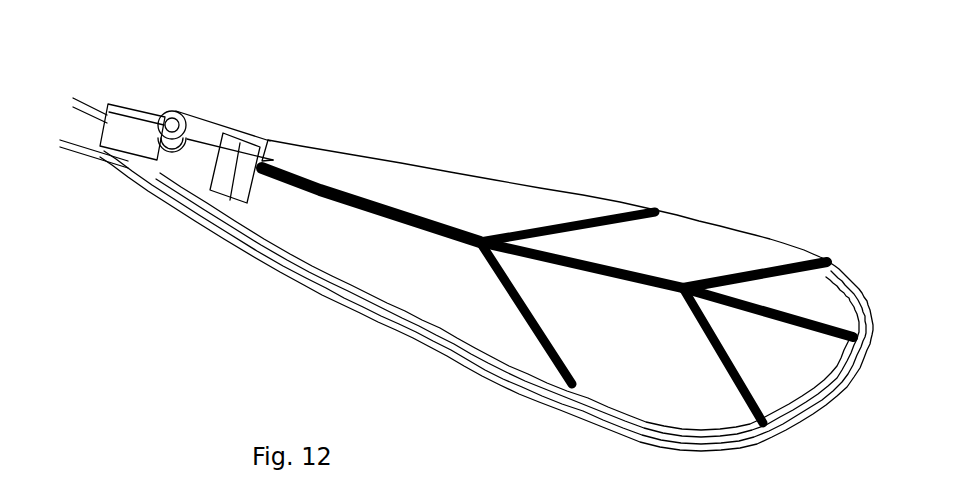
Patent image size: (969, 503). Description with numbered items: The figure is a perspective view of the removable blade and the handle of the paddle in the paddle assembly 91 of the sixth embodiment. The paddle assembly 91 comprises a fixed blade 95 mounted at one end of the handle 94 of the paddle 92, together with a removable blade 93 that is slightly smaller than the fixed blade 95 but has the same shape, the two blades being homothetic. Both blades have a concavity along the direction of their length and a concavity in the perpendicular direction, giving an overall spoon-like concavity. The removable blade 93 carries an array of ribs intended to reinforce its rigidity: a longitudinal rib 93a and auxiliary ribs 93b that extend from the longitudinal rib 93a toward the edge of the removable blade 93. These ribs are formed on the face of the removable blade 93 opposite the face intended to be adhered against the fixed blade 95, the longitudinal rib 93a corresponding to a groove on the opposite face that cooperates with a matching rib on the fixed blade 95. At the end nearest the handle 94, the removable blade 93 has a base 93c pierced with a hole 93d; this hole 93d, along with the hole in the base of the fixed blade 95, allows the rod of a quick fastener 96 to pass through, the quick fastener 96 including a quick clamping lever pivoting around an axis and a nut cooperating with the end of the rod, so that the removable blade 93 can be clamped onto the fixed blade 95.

The paddle assembly 91 is at (556, 163).
The paddle 92 is at (80, 100).
The removable blade 93 is at (783, 243).
The longitudinal rib 93a is at (650, 273).
The auxiliary ribs 93b is at (827, 262).
The base 93c is at (135, 108).
The hole 93d is at (162, 147).
The handle 94 is at (82, 144).
The fixed blade 95 is at (840, 383).
The quick fastener 96 is at (218, 125).